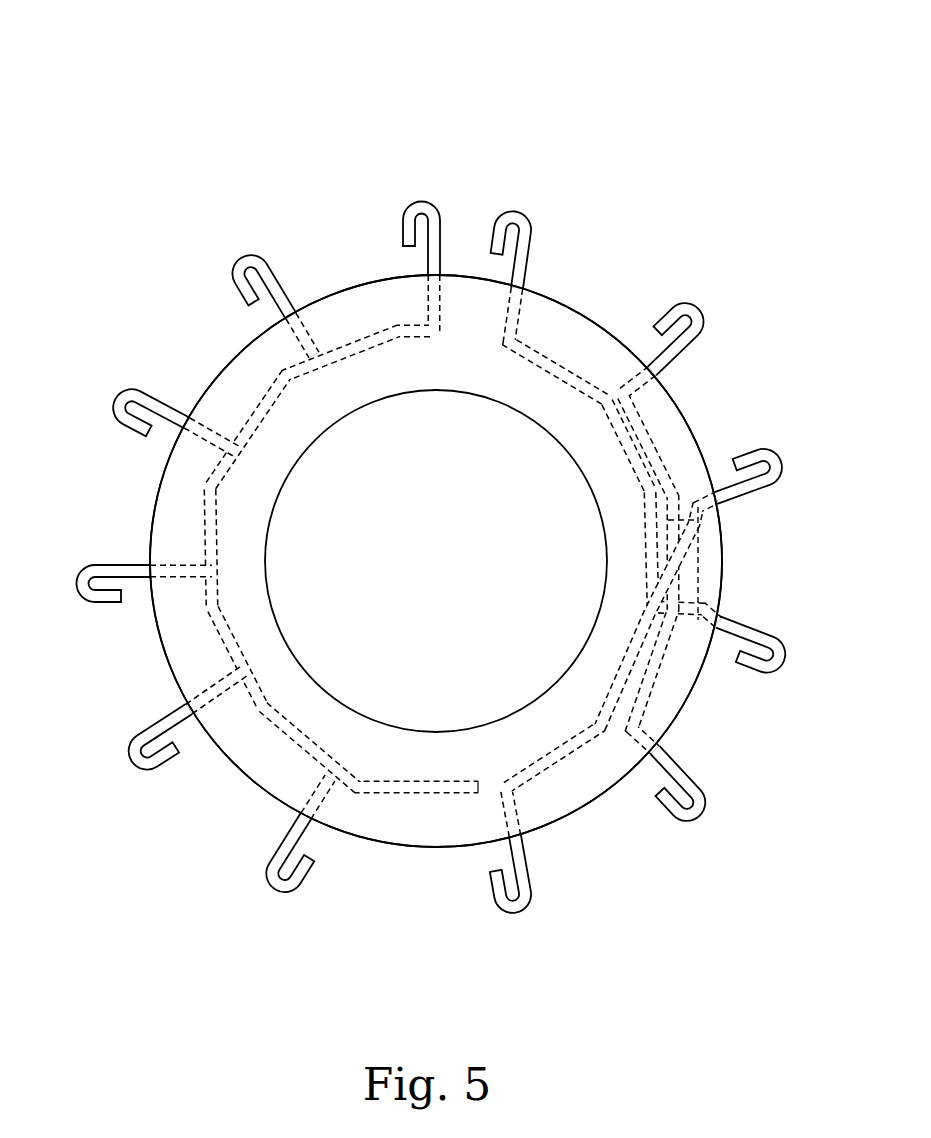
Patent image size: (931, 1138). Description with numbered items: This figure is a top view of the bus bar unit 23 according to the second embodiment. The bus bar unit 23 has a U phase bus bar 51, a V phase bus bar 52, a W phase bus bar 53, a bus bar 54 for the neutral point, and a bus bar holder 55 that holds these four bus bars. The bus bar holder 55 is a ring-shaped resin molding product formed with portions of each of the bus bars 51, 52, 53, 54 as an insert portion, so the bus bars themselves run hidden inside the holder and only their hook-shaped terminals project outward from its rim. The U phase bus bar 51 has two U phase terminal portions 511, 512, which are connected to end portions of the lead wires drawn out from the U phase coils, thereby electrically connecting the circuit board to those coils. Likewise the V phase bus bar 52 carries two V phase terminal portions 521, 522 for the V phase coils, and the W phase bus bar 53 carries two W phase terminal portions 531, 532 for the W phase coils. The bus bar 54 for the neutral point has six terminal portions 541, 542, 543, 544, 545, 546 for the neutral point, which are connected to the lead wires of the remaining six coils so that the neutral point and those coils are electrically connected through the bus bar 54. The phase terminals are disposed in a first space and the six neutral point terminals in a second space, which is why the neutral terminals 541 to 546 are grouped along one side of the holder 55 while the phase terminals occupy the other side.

The bus bar unit 23 is at (302, 105).
The U phase bus bar 51 is at (578, 762).
The V phase bus bar 52 is at (668, 675).
The W phase bus bar 53 is at (573, 358).
The bus bar for the neutral point 54 is at (205, 525).
The bus bar holder 55 is at (420, 825).
The U phase terminal portion 511 is at (765, 478).
The U phase terminal portion 512 is at (515, 898).
The V phase terminal portion 521 is at (683, 320).
The V phase terminal portion 522 is at (692, 808).
The W phase terminal portion 531 is at (520, 215).
The W phase terminal portion 532 is at (760, 655).
The terminal portion for the neutral point 541 is at (425, 204).
The terminal portion for the neutral point 542 is at (248, 282).
The terminal portion for the neutral point 543 is at (130, 400).
The terminal portion for the neutral point 544 is at (85, 592).
The terminal portion for the neutral point 545 is at (143, 762).
The terminal portion for the neutral point 546 is at (278, 882).